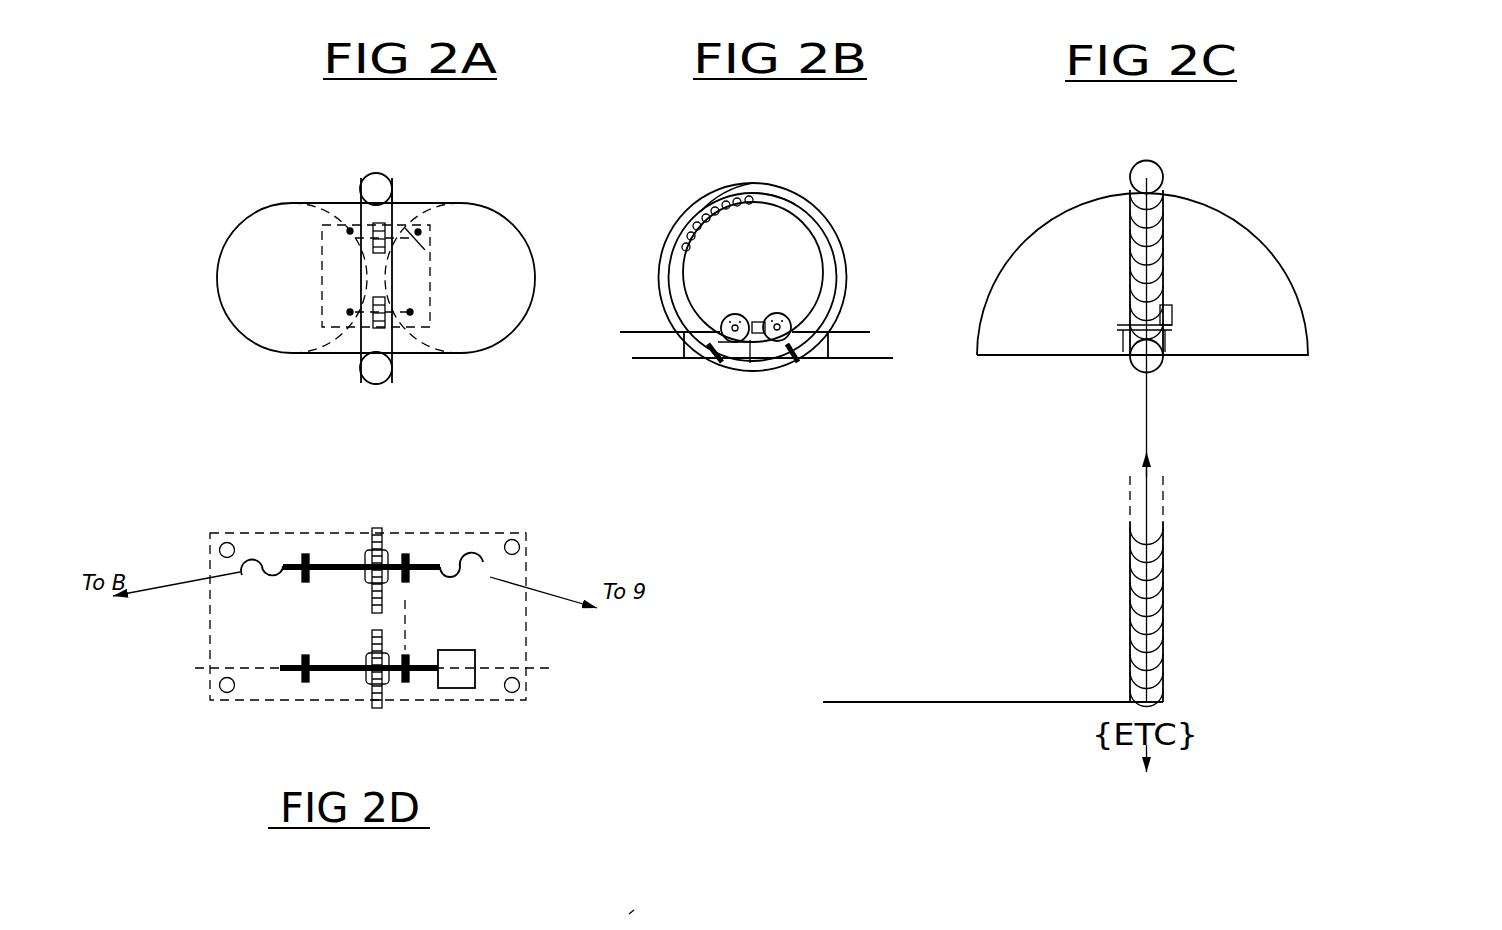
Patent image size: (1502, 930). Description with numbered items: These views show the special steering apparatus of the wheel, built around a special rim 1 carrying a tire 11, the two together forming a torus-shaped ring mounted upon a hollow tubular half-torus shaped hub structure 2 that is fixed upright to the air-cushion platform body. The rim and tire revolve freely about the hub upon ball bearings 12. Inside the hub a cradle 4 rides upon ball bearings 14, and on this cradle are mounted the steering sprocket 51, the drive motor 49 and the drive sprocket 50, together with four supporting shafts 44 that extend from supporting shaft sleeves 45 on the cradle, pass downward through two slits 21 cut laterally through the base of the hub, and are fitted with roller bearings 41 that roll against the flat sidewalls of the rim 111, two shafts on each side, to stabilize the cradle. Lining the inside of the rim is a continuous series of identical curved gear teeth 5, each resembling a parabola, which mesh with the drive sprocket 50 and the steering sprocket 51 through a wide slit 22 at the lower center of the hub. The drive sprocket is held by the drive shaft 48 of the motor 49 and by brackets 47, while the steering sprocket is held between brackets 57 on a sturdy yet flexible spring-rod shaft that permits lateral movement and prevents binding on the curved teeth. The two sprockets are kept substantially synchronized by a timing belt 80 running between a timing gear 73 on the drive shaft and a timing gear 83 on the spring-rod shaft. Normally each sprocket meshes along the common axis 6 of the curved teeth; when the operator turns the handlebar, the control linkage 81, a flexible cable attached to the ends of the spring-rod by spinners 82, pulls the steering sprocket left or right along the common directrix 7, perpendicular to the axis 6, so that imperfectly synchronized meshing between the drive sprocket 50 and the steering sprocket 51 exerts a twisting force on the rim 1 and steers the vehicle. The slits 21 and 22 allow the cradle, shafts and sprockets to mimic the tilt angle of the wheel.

In FIG. 2A, the special rim 1 is at (327, 233).
In FIG. 2B, the special rim 1 is at (802, 268).
In FIG. 2C, the special rim 1 is at (1208, 414).
In FIG. 2A, the hollow tubular half-torus shaped hub structure 2 is at (400, 272).
In FIG. 2B, the hollow tubular half-torus shaped hub structure 2 is at (799, 265).
In FIG. 2C, the hollow tubular half-torus shaped hub structure 2 is at (1181, 267).
In FIG. 2A, the cradle 4 is at (306, 217).
In FIG. 2D, the cradle 4 is at (446, 616).
In FIG. 2C, the curved gear teeth 5 is at (1259, 448).
In FIG. 2C, the common axis 6 is at (1268, 498).
In FIG. 2C, the common directrix 7 is at (993, 657).
In FIG. 2A, the tire 11 is at (452, 149).
In FIG. 2B, the tire 11 is at (697, 151).
In FIG. 2B, the ball bearings 12 is at (685, 196).
In FIG. 2B, the ball bearings 14 is at (824, 304).
In FIG. 2A, the slits 21 is at (294, 305).
In FIG. 2A, the wide slit 22 is at (246, 257).
In FIG. 2B, the roller bearings 41 is at (776, 335).
In FIG. 2C, the roller bearings 41 is at (1226, 393).
In FIG. 2A, the supporting shafts 44 is at (490, 209).
In FIG. 2B, the supporting shafts 44 is at (814, 379).
In FIG. 2C, the supporting shafts 44 is at (1294, 378).
In FIG. 2B, the supporting shaft sleeves 45 is at (789, 312).
In FIG. 2C, the supporting shaft sleeves 45 is at (1291, 355).
In FIG. 2D, the supporting shaft sleeves 45 is at (309, 636).
In FIG. 2D, the brackets 47 is at (285, 719).
In FIG. 2D, the drive shaft 48 is at (411, 527).
In FIG. 2C, the drive motor 49 is at (1312, 304).
In FIG. 2D, the drive motor 49 is at (557, 708).
In FIG. 2A, the drive sprocket 50 is at (268, 276).
In FIG. 2B, the drive sprocket 50 is at (843, 279).
In FIG. 2A, the steering sprocket 51 is at (479, 289).
In FIG. 2D, the steering sprocket 51 is at (445, 566).
In FIG. 2D, the brackets 57 is at (335, 509).
In FIG. 2D, the timing gear 73 is at (416, 708).
In FIG. 2B, the timing belt 80 is at (708, 382).
In FIG. 2D, the timing belt 80 is at (564, 645).
In FIG. 2D, the control linkage 81 is at (324, 582).
In FIG. 2D, the spinners 82 is at (191, 605).
In FIG. 2D, the timing gear 83 is at (504, 535).
In FIG. 2A, the flat sidewalls of the rim 111 is at (481, 167).
In FIG. 2B, the flat sidewalls of the rim 111 is at (848, 163).
In FIG. 2C, the flat sidewalls of the rim 111 is at (1285, 143).